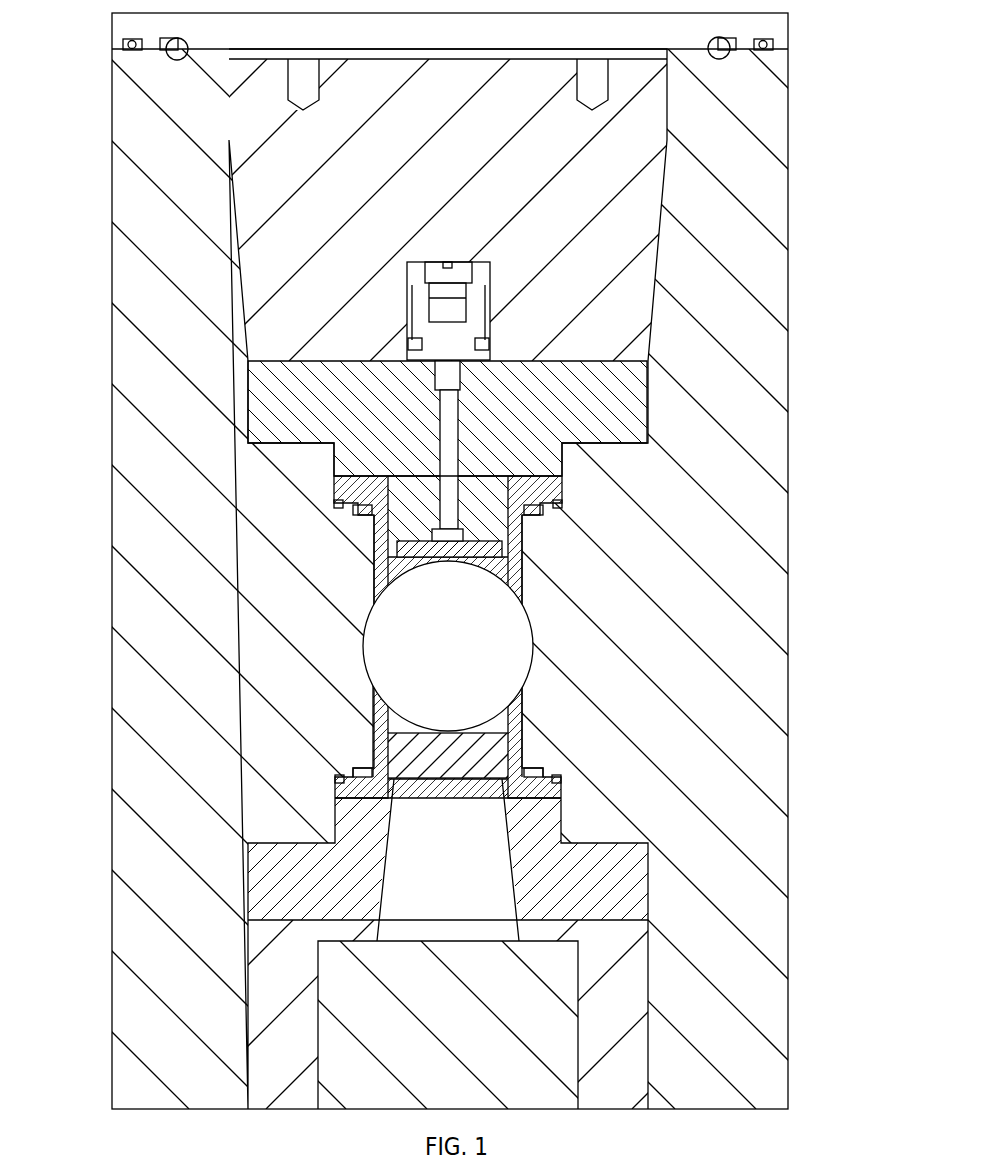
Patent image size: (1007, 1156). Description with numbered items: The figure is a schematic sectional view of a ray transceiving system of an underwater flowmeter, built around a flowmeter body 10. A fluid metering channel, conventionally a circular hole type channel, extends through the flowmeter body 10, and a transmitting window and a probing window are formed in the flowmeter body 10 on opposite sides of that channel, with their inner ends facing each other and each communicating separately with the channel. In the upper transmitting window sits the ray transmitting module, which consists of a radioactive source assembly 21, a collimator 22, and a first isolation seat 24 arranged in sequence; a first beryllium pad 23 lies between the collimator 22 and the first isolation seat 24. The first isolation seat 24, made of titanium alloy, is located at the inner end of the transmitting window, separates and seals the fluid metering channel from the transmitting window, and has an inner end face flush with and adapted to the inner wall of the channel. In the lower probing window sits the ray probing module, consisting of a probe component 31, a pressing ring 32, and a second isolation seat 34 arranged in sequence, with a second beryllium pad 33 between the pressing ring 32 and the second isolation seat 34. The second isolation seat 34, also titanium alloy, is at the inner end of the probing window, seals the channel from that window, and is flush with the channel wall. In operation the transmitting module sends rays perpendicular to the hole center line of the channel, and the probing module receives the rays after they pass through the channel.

The flowmeter body 10 is at (707, 281).
The radioactive source assembly 21 is at (548, 270).
The collimator 22 is at (512, 425).
The first beryllium pad 23 is at (462, 549).
The first isolation seat 24 is at (510, 573).
The probe component 31 is at (392, 982).
The pressing ring 32 is at (338, 883).
The second beryllium pad 33 is at (440, 767).
The second isolation seat 34 is at (385, 727).